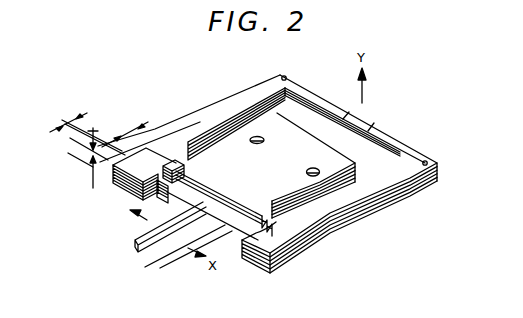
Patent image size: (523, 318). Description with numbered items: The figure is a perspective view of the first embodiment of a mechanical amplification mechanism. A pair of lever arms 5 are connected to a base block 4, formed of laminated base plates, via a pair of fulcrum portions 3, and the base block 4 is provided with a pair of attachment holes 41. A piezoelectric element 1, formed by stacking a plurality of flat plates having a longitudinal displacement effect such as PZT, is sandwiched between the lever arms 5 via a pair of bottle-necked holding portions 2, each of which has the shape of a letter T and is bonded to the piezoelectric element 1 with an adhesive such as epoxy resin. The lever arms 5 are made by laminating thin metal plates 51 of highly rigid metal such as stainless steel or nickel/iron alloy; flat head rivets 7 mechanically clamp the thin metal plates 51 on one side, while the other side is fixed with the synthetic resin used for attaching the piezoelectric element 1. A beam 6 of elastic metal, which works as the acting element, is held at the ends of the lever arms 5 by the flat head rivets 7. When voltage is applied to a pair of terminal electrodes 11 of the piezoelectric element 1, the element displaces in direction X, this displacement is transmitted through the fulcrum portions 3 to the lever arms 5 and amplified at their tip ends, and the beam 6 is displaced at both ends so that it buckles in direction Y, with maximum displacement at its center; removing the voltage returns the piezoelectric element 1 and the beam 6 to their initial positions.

The piezoelectric element 1 is at (222, 222).
The terminal electrodes 11 is at (137, 247).
The bottle-necked holding portions 2 is at (190, 175).
The fulcrum portions 3 is at (188, 150).
The base block 4 is at (343, 149).
The attachment holes 41 is at (265, 140).
The lever arms 5 is at (214, 116).
The thin metal plates 51 is at (352, 234).
The beam 6 is at (373, 117).
The flat head rivets 7 is at (284, 76).